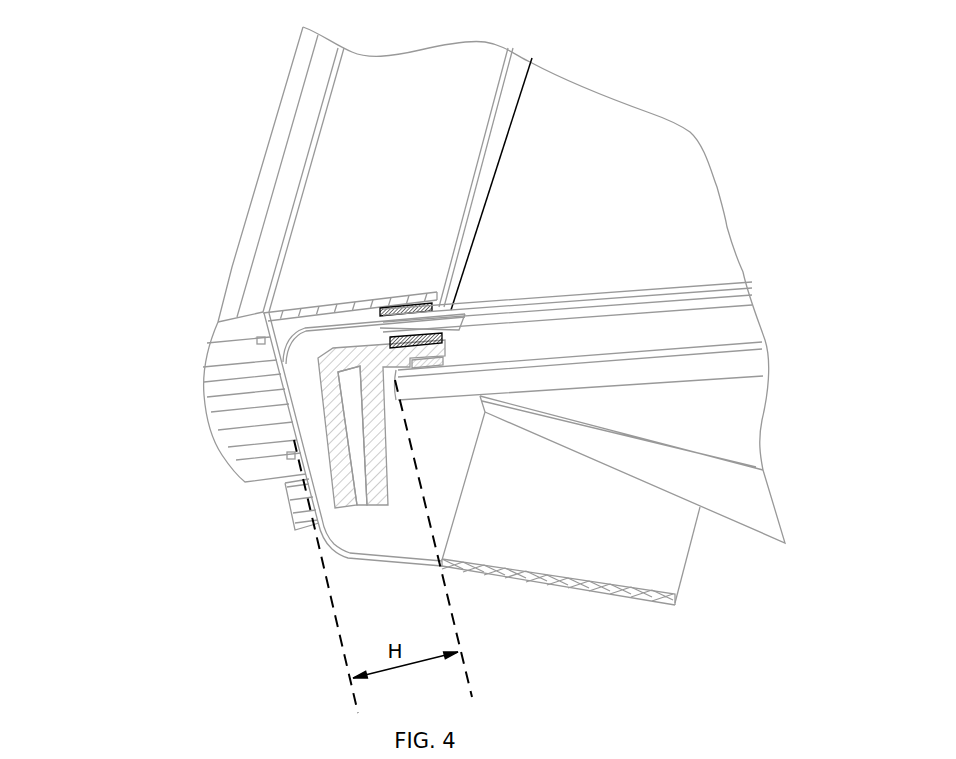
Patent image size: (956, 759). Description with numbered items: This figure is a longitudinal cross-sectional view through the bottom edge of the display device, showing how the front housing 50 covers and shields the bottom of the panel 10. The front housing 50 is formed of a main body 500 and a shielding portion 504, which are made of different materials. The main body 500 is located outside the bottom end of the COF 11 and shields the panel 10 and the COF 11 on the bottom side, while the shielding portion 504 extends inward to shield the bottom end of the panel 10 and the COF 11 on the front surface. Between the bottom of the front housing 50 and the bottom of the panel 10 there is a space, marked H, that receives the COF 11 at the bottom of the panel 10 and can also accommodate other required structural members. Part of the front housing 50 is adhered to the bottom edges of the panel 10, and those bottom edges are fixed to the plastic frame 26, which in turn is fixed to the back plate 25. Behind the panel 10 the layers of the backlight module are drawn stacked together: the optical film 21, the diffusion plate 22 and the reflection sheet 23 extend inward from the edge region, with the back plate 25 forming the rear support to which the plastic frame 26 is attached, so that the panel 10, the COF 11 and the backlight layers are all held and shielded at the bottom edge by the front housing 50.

The panel 10 is at (640, 148).
The COF 11 is at (325, 432).
The optical film 21 is at (481, 377).
The diffusion plate 22 is at (595, 381).
The reflection sheet 23 is at (752, 468).
The back plate 25 is at (767, 534).
The plastic frame 26 is at (357, 369).
The front housing 50 is at (82, 258).
The main body 500 is at (238, 358).
The shielding portion 504 is at (318, 263).